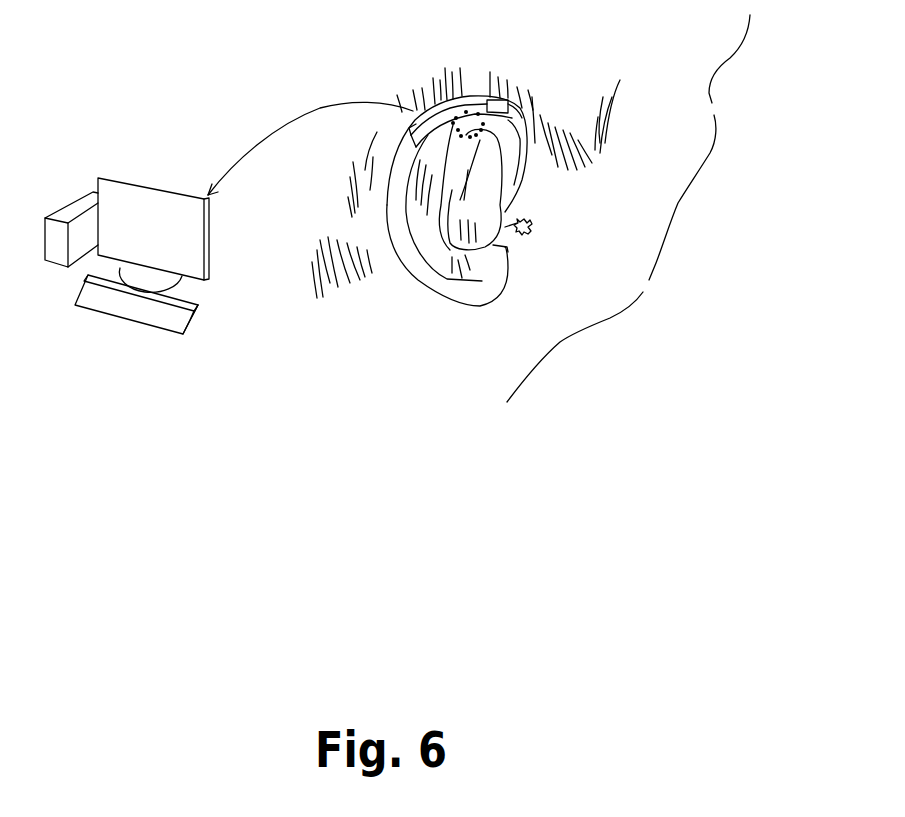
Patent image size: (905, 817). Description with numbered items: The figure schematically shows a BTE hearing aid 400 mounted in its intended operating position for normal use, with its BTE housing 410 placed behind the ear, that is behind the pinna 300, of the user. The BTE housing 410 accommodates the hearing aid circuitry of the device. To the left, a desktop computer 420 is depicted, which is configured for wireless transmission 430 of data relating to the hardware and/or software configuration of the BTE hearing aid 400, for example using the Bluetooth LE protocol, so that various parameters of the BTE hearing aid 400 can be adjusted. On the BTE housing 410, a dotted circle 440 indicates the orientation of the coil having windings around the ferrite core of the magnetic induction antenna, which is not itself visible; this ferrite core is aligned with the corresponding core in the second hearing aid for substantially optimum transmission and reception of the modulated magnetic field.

The pinna 300 is at (417, 283).
The BTE hearing aid 400 is at (443, 73).
The BTE housing 410 is at (483, 100).
The desktop computer 420 is at (140, 155).
The wireless transmission 430 is at (342, 103).
The dotted circle 440 is at (508, 113).